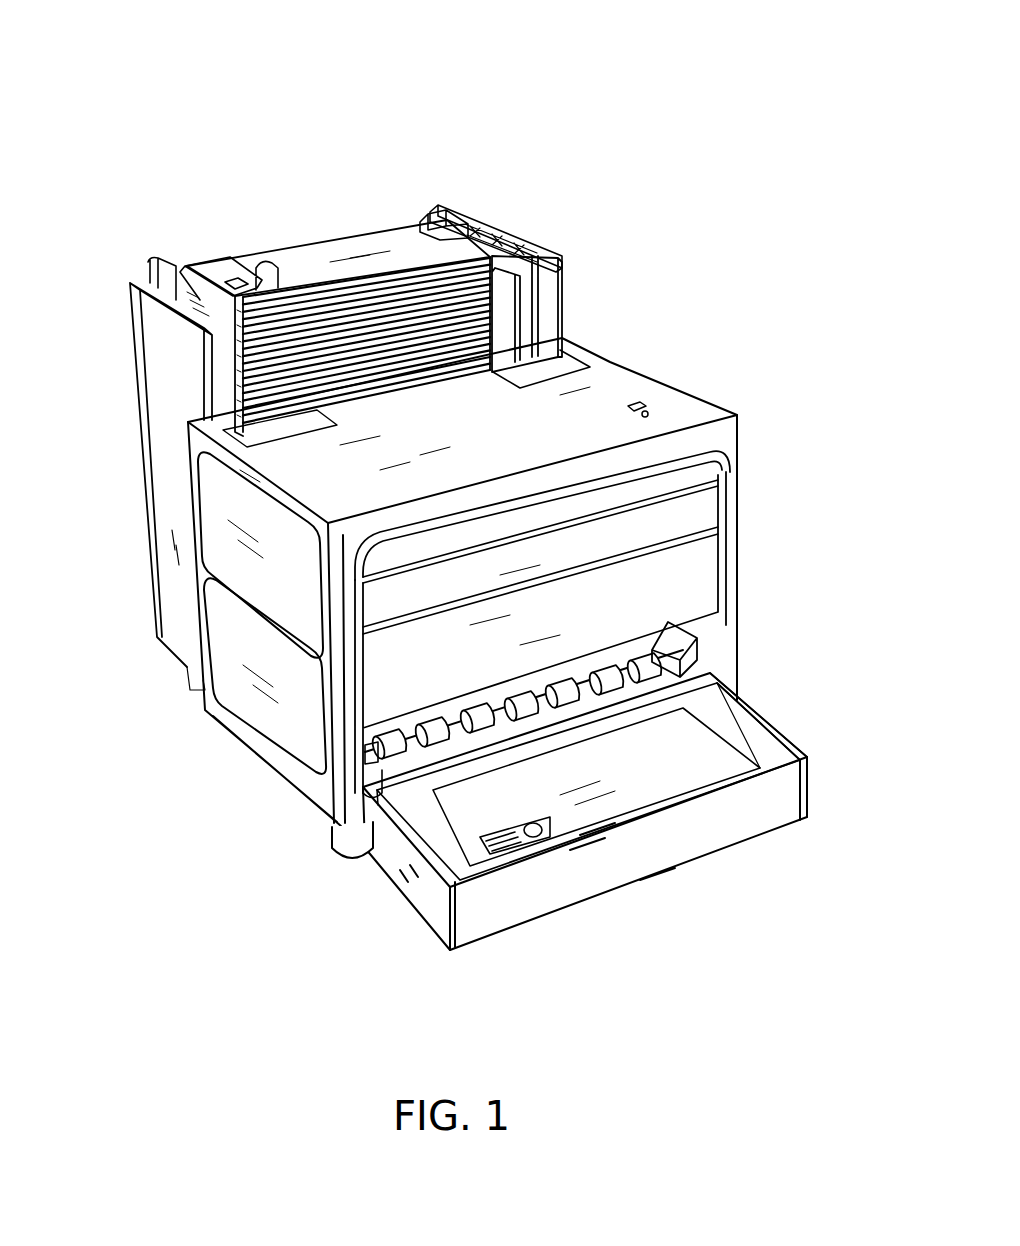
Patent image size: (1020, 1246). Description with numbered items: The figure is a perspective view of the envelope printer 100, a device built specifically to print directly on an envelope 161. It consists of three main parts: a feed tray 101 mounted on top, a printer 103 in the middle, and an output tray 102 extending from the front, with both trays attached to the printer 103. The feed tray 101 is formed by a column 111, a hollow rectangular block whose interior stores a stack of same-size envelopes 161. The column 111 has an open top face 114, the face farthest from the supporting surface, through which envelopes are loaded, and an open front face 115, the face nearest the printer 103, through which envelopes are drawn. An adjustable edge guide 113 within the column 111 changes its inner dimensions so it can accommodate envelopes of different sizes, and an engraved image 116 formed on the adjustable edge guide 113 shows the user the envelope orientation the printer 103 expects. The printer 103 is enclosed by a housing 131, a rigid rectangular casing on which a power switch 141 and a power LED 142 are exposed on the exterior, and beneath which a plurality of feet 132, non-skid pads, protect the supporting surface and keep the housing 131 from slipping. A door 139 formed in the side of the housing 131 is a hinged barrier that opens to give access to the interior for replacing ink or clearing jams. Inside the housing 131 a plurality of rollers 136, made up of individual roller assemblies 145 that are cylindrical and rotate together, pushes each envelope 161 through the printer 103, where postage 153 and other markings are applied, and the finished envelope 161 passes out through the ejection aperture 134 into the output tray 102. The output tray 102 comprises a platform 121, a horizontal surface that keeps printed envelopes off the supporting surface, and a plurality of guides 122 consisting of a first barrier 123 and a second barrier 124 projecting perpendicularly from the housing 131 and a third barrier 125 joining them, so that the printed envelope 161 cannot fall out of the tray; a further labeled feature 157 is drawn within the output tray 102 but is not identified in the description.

The envelope printer 100 is at (136, 73).
The feed tray 101 is at (560, 283).
The output tray 102 is at (765, 805).
The printer 103 is at (738, 545).
The column 111 is at (153, 361).
The adjustable edge guide 113 is at (517, 288).
The open top face 114 is at (375, 245).
The open front face 115 is at (500, 328).
The engraved image 116 is at (222, 268).
The platform 121 is at (735, 752).
The plurality of guides 122 is at (800, 740).
The first barrier 123 is at (393, 833).
The second barrier 124 is at (745, 690).
The third barrier 125 is at (600, 883).
The housing 131 is at (738, 485).
The plurality of feet 132 is at (345, 848).
The ejection aperture 134 is at (373, 768).
The plurality of rollers 136 is at (653, 660).
The door 139 is at (397, 650).
The power switch 141 is at (640, 405).
The power LED 142 is at (650, 410).
The individual roller assembly 145 is at (563, 688).
The postage 153 is at (512, 828).
The tray surface 157 is at (608, 780).
The envelope 161 is at (445, 283).